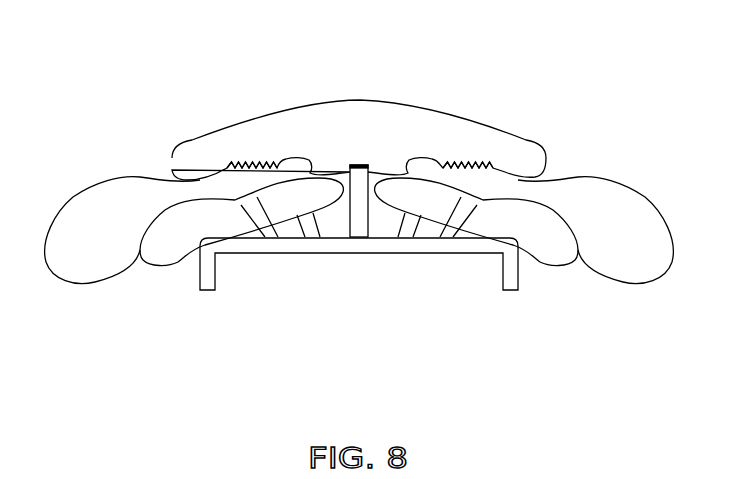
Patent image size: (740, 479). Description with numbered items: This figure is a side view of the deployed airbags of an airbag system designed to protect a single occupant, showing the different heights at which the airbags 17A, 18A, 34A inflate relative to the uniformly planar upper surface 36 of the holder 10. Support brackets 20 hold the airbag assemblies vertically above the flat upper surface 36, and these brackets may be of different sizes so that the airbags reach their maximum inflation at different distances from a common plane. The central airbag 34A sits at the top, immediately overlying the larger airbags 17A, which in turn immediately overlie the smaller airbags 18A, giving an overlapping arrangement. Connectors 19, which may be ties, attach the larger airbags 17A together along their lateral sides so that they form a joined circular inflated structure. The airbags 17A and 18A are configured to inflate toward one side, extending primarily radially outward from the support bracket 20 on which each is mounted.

The holder 10 is at (467, 254).
The support brackets 20 is at (265, 231).
The uniformly planar upper surface 36 is at (250, 237).
The connectors 19 is at (248, 163).
The airbag 34A is at (317, 104).
The airbags 17A is at (124, 197).
The airbags 18A is at (170, 241).